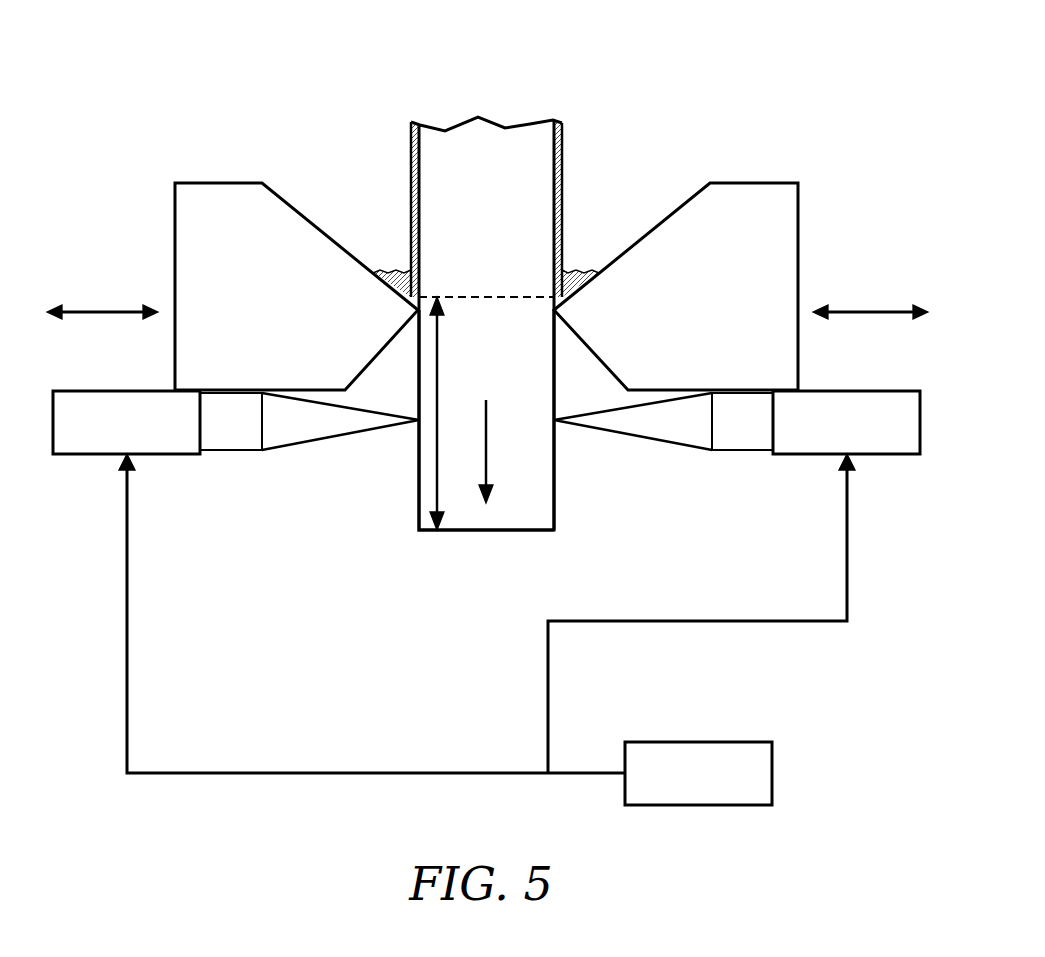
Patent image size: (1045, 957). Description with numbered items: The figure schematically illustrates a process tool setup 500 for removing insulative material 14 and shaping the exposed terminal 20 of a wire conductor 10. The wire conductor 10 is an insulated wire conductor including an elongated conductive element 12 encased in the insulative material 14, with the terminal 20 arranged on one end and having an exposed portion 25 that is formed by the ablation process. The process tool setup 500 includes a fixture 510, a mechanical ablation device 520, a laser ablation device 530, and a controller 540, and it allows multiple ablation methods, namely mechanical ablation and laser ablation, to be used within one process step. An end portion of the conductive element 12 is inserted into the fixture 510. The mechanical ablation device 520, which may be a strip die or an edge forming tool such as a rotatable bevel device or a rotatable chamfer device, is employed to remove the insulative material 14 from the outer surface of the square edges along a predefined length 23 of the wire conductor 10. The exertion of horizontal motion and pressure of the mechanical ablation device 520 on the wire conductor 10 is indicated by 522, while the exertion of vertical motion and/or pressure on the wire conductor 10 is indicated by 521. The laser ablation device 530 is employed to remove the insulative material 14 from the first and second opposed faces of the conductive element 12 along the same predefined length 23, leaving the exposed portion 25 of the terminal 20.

The process tool setup 500 is at (261, 118).
The fixture 510 is at (171, 242).
The mechanical ablation device 520 is at (486, 286).
The horizontal motion and pressure 522 is at (487, 299).
The laser ablation device 530 is at (486, 422).
The controller 540 is at (487, 629).
The wire conductor 10 is at (504, 282).
The insulative material 14 is at (411, 182).
The conductive element 12 is at (486, 320).
The vertical motion and/or pressure 521 is at (486, 436).
The predefined length 23 is at (437, 466).
The terminal 20 is at (560, 449).
The exposed portion 25 is at (486, 420).